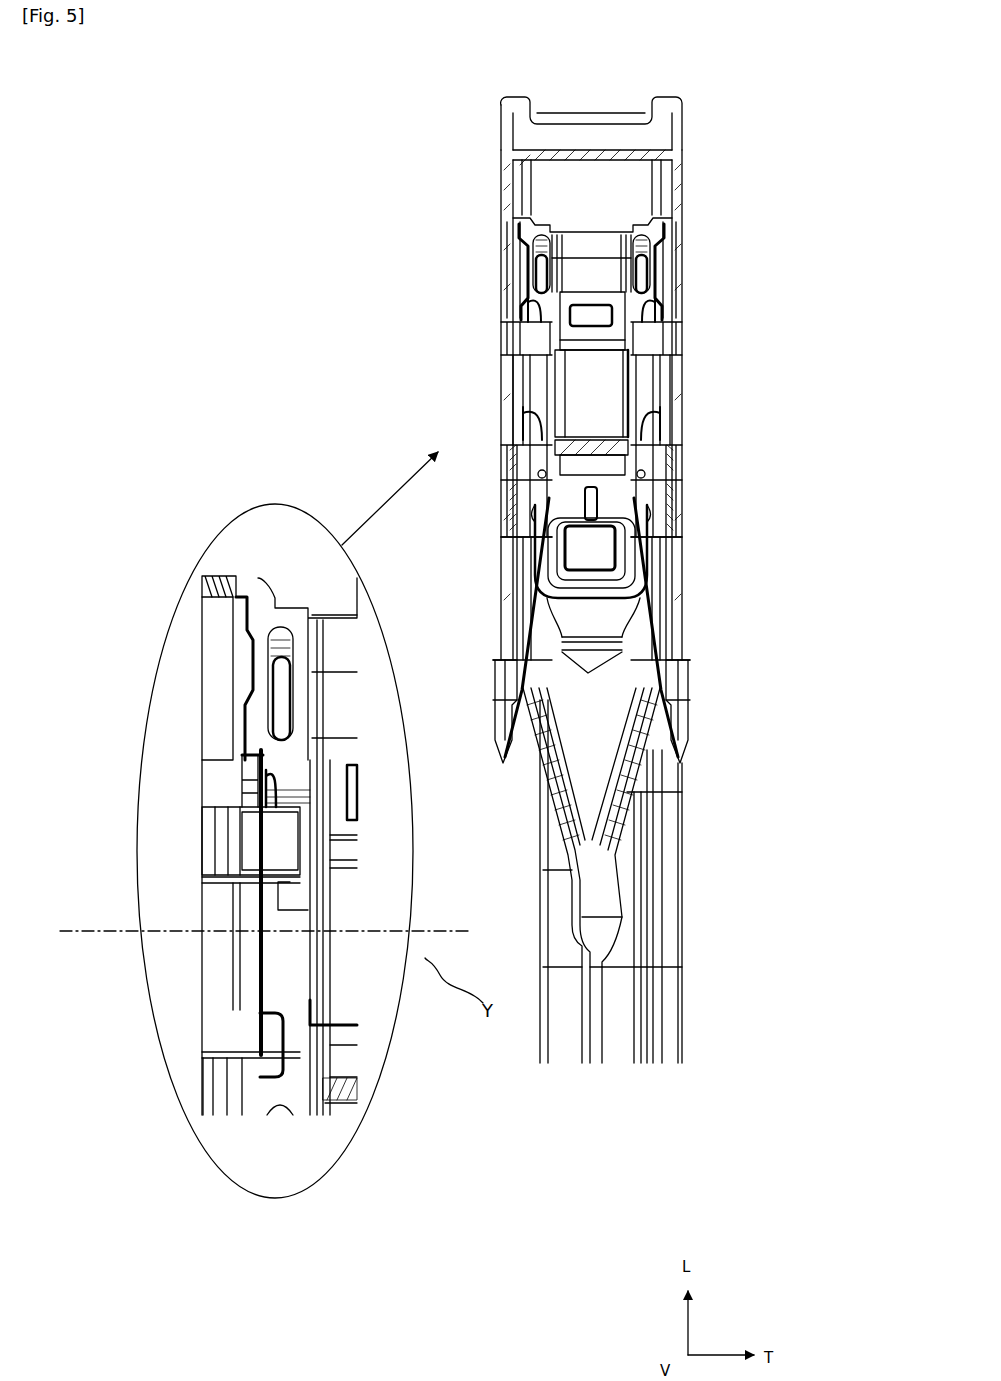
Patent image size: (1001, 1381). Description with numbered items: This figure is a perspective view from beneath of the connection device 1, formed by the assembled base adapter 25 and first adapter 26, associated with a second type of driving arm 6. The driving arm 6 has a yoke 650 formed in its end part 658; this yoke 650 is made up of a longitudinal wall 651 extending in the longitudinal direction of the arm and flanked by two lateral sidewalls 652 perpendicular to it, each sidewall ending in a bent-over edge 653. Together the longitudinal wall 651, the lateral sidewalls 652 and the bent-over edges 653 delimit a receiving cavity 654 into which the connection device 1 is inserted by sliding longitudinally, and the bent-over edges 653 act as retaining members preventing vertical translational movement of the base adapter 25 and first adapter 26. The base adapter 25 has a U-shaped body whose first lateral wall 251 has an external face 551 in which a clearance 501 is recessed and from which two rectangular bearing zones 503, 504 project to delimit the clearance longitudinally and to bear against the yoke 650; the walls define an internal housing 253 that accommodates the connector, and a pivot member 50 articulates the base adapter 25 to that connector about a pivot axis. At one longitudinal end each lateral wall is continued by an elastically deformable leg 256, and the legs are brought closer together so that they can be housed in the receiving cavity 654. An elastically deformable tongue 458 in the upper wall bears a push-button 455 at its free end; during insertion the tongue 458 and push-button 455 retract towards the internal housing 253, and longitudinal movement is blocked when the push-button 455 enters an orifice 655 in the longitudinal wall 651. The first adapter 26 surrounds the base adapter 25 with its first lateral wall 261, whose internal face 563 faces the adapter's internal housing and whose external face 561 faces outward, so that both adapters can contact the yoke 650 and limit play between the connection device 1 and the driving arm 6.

The connection device 1 is at (459, 232).
The driving arm 6 is at (387, 322).
The base adapter 25 is at (692, 129).
The first adapter 26 is at (656, 380).
The pivot member 50 is at (330, 975).
The first lateral wall 251 is at (260, 962).
The internal housing 253 is at (592, 553).
The elastically deformable leg 256 is at (662, 588).
The first lateral wall 261 is at (245, 948).
The push-button 455 is at (655, 585).
The tongue 458 is at (665, 471).
The clearance 501 is at (245, 742).
The bearing zone 503 is at (200, 1112).
The bearing zone 504 is at (240, 717).
The external face 551 is at (240, 729).
The external face 561 is at (240, 923).
The internal face 563 is at (240, 890).
The yoke 650 is at (624, 846).
The longitudinal wall 651 is at (627, 793).
The lateral sidewall 652 is at (548, 845).
The bent-over edge 653 is at (503, 340).
The receiving cavity 654 is at (590, 710).
The orifice 655 is at (548, 650).
The end part 658 is at (620, 1062).